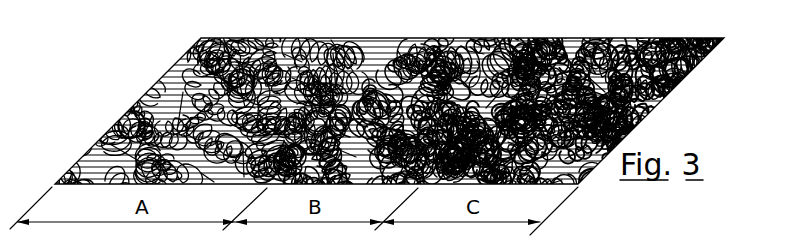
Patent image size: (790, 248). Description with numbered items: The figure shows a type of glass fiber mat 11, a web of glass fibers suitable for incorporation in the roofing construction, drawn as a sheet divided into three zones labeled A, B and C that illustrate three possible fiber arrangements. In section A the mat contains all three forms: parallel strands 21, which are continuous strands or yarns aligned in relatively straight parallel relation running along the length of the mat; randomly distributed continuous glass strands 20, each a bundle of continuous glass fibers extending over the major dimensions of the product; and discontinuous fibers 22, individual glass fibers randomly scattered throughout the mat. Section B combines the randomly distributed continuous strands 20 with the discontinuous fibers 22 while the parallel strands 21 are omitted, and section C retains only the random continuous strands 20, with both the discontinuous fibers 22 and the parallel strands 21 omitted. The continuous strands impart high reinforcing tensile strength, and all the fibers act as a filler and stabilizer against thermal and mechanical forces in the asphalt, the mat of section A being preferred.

The glass fiber mat 11 is at (170, 54).
The randomly distributed continuous glass strands 20 is at (105, 150).
The parallel strands 21 is at (119, 120).
The discontinuous fibers 22 is at (205, 52).